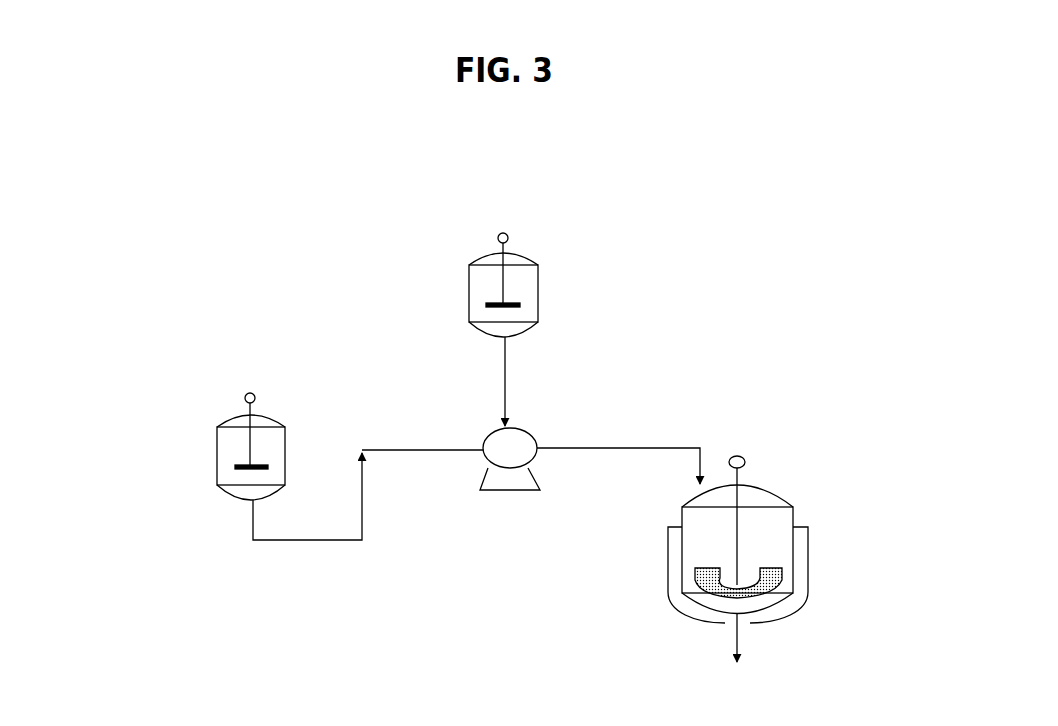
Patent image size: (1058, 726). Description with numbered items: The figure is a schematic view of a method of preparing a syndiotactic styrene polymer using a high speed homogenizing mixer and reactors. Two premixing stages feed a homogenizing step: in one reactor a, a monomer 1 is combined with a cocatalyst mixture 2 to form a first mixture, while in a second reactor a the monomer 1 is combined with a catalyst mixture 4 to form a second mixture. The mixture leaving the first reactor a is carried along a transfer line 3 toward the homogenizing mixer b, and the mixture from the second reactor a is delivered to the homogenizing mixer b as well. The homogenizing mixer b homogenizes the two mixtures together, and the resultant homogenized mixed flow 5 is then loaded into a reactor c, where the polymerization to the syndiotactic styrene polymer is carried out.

The monomer 1 is at (480, 244).
The cocatalyst mixture 2 is at (267, 411).
The transfer line from first reactor 3 is at (380, 517).
The catalyst mixture 4 is at (519, 244).
The homogenized mixed flow 5 is at (618, 450).
The reactor a is at (538, 299).
The homogenizing mixer b is at (488, 430).
The reactor c is at (793, 517).